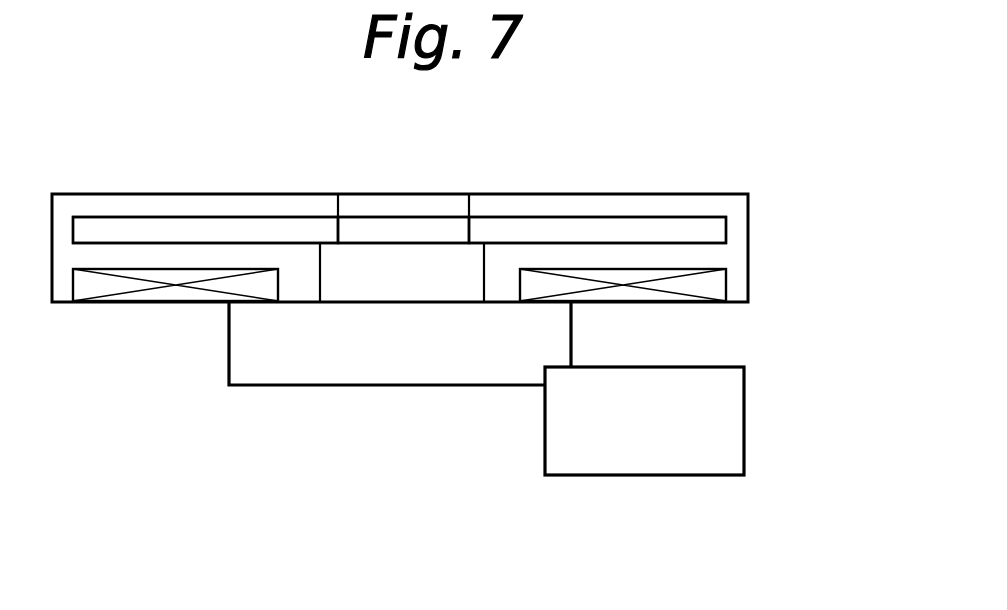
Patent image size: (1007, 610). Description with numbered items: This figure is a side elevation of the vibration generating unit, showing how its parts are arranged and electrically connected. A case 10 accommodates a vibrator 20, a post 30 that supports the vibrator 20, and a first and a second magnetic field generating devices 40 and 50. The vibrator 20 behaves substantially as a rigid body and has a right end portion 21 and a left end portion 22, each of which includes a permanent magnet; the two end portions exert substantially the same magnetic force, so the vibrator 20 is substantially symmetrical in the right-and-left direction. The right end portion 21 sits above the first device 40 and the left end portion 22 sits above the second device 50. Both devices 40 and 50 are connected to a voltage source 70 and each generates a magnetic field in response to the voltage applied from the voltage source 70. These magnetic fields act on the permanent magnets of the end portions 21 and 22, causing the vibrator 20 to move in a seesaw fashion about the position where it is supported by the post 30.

The case 10 is at (750, 206).
The vibrator 20 is at (583, 217).
The right end portion 21 is at (710, 232).
The left end portion 22 is at (190, 218).
The post 30 is at (405, 203).
The first magnetic field generating device 40 is at (713, 288).
The second magnetic field generating device 50 is at (92, 286).
The voltage source 70 is at (690, 478).